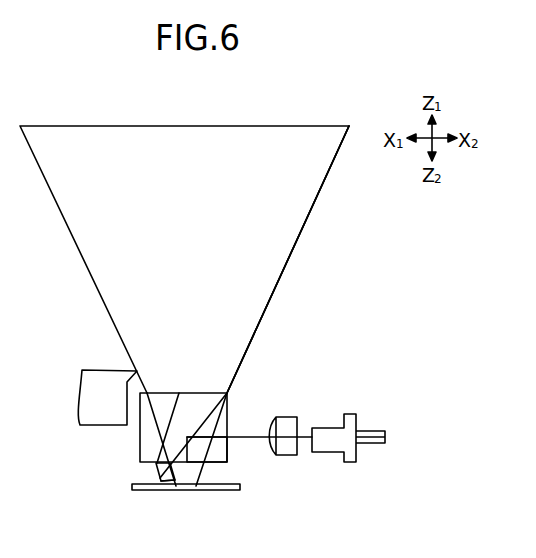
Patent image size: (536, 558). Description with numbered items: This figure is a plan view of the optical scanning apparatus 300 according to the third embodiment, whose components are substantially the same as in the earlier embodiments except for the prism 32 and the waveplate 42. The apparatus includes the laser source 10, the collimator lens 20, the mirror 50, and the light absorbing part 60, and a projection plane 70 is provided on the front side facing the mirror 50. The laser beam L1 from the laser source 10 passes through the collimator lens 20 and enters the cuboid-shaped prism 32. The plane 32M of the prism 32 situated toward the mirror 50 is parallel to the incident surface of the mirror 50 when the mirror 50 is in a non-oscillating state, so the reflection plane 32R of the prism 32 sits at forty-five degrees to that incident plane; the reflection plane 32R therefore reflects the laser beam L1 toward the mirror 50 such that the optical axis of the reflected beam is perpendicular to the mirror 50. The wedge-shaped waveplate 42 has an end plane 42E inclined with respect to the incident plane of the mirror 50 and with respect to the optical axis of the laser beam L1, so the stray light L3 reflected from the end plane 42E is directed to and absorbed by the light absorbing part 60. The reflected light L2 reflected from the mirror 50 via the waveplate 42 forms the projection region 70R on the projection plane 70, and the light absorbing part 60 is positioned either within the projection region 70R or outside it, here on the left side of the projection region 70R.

The optical scanning apparatus 300 is at (57, 100).
The projection plane 70 is at (202, 126).
The projection region 70R is at (290, 186).
The reflected light L2 is at (292, 248).
The light absorbing part 60 is at (93, 369).
The prism 32 is at (230, 405).
The reflection plane 32R is at (203, 407).
The plane of the prism situated toward the mirror 32M is at (228, 463).
The stray light L3 is at (178, 394).
The laser beam L1 is at (248, 438).
The waveplate 42 is at (156, 465).
The end plane 42E is at (163, 480).
The mirror 50 is at (132, 490).
The collimator lens 20 is at (288, 415).
The laser source 10 is at (327, 428).